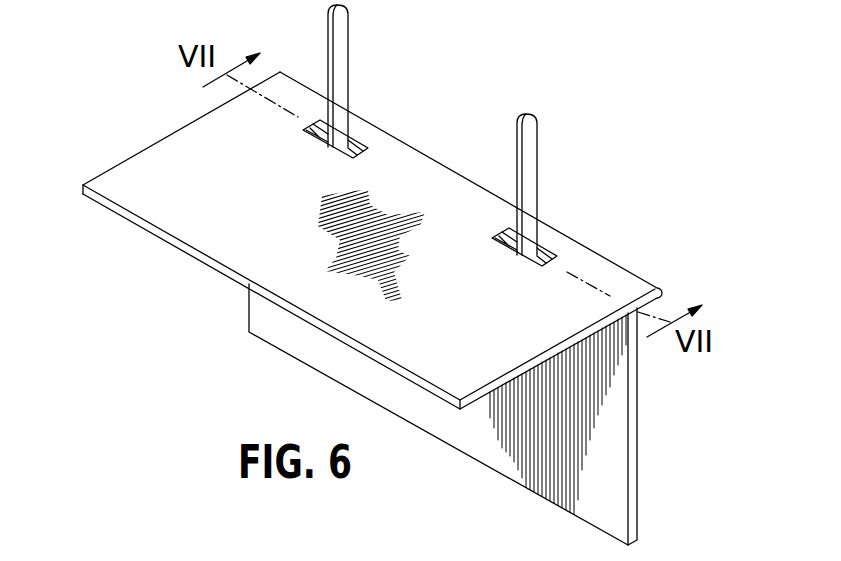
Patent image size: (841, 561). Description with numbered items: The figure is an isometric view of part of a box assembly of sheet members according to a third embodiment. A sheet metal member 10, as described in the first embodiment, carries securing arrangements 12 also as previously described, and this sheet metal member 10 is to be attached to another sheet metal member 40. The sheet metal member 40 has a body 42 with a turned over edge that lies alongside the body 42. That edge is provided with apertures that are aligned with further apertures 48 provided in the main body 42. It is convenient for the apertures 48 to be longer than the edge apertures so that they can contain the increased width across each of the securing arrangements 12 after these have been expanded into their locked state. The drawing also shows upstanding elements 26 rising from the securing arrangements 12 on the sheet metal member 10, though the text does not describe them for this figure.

The sheet metal member 10 is at (188, 265).
The securing arrangements 12 is at (358, 140).
The post 26 is at (343, 32).
The sheet metal member 40 is at (170, 131).
The body 42 is at (208, 210).
The apertures 48 is at (308, 126).